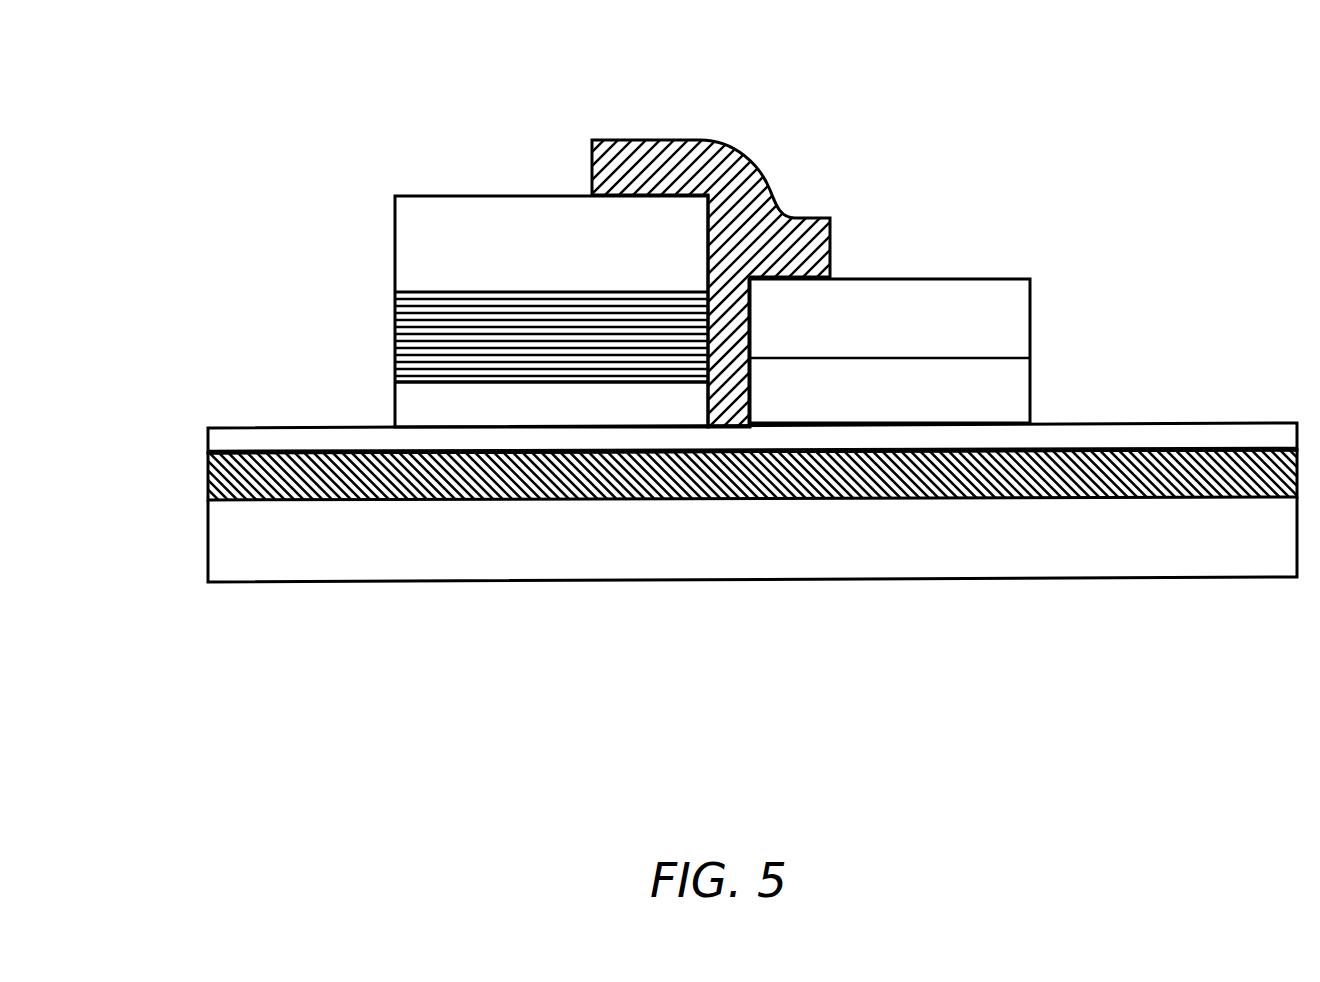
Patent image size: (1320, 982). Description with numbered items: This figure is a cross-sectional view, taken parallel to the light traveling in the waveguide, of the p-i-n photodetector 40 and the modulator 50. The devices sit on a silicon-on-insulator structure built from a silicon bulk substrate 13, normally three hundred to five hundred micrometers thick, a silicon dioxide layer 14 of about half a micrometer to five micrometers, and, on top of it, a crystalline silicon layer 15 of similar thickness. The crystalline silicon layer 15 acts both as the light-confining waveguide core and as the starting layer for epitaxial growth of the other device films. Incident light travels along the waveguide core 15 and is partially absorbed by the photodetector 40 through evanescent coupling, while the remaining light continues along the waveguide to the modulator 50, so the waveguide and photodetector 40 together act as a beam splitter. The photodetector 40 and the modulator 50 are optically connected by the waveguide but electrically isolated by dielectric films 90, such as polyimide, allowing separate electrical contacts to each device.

The silicon bulk substrate 13 is at (738, 558).
The silicon dioxide layer 14 is at (186, 477).
The crystalline silicon layer 15 is at (204, 406).
The photodetector 40 is at (364, 284).
The modulator 50 is at (1039, 259).
The dielectric films 90 is at (768, 152).